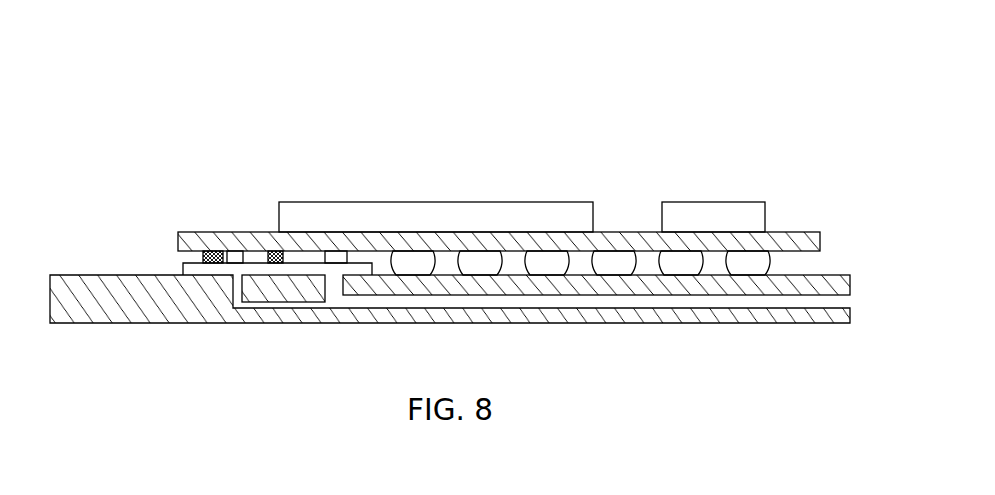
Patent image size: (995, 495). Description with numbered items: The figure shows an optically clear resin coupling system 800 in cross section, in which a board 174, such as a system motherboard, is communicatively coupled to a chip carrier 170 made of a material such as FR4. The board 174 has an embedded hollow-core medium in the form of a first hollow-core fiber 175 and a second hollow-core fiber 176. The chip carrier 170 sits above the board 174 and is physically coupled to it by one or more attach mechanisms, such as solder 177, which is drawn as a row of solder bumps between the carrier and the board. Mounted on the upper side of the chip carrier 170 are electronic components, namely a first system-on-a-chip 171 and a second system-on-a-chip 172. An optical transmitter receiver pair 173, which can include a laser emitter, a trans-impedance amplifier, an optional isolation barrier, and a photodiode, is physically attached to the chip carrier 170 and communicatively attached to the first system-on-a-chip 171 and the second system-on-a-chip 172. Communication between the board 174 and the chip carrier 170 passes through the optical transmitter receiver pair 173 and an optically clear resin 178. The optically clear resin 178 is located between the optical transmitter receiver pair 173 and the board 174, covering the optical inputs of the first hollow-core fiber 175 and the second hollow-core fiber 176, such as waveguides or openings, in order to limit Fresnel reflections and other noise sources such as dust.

The optically clear resin coupling system 800 is at (766, 115).
The chip carrier 170 is at (249, 231).
The first system-on-a-chip 171 is at (296, 201).
The second system-on-a-chip 172 is at (682, 201).
The optical transmitter receiver pair 173 is at (212, 253).
The board 174 is at (68, 275).
The first hollow-core fiber 175 is at (260, 308).
The second hollow-core fiber 176 is at (373, 297).
The solder 177 is at (772, 262).
The optically clear resin 178 is at (184, 265).